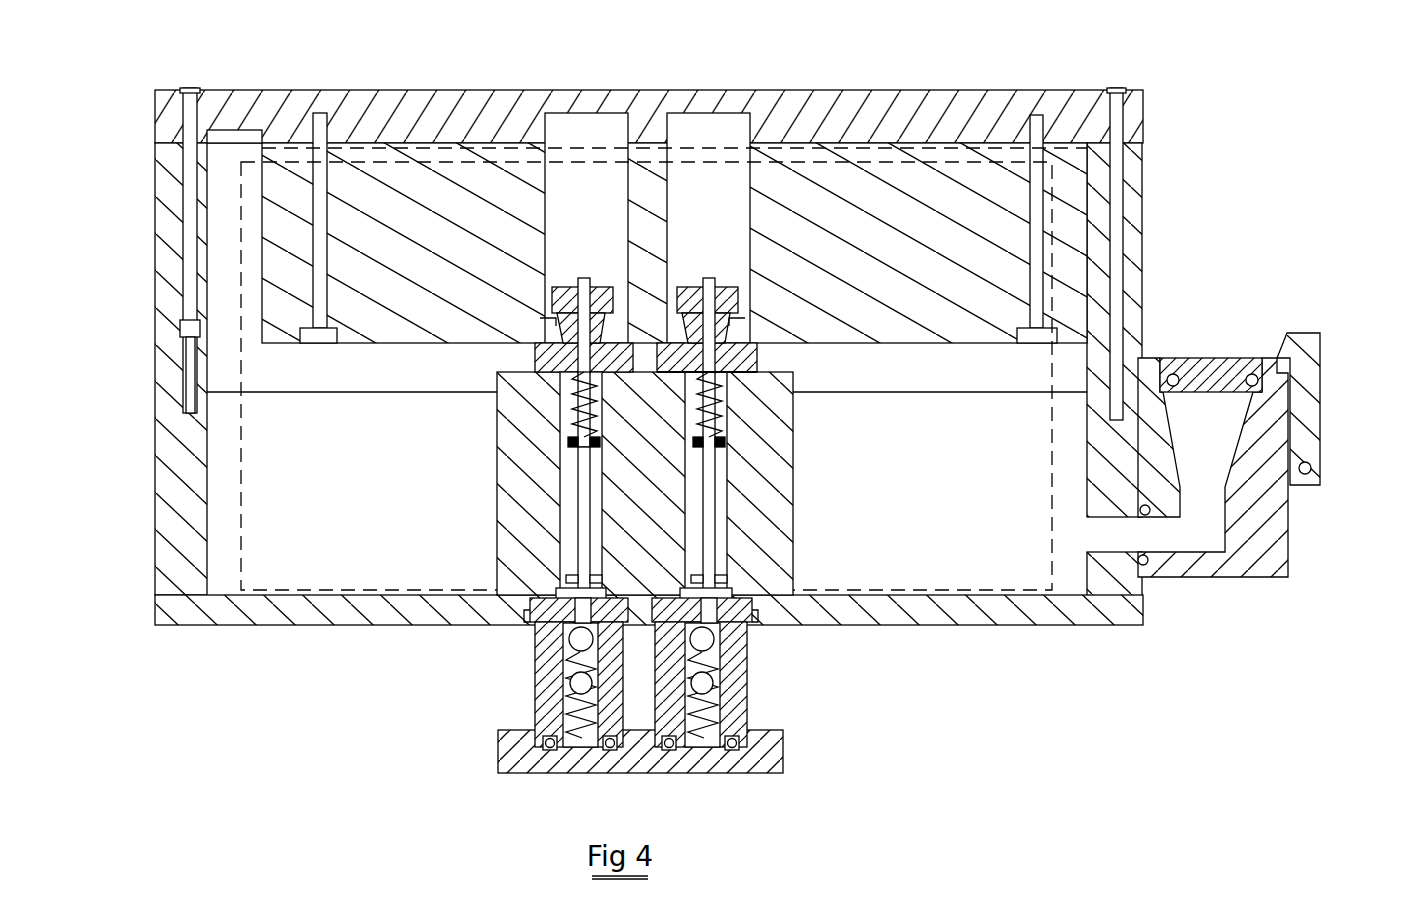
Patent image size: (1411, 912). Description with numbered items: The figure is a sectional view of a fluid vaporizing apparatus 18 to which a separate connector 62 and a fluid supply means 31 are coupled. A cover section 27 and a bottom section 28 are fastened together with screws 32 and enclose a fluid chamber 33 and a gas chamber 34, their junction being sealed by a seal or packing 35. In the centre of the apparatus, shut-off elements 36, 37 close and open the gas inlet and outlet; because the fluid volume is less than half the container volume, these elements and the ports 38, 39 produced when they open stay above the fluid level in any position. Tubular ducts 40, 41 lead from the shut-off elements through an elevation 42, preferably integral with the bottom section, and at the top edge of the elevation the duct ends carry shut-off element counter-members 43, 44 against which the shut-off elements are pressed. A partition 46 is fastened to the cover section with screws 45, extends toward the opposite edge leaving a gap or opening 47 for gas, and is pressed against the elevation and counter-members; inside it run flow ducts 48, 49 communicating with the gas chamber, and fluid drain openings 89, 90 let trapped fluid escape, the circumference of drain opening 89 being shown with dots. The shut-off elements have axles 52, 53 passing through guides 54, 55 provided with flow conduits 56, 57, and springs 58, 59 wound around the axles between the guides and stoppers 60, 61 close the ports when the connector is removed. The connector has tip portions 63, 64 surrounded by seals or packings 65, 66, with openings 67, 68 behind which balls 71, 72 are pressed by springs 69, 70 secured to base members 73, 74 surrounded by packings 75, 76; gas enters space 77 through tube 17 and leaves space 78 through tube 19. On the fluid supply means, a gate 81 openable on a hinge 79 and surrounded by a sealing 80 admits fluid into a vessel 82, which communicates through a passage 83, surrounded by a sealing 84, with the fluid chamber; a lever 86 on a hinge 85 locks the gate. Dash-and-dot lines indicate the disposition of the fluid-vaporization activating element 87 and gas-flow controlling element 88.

The tube 17 is at (565, 712).
The fluid vaporizing apparatus 18 is at (290, 628).
The tube 19 is at (718, 700).
The cover section 27 is at (170, 235).
The bottom section 28 is at (183, 443).
The fluid supply means 31 is at (1262, 550).
The screws 32 is at (173, 175).
The fluid chamber 33 is at (220, 485).
The gas chamber 34 is at (275, 368).
The seal or packing 35 is at (195, 330).
The shut-off element 36 is at (569, 285).
The shut-off element 37 is at (692, 285).
The port 38 is at (540, 318).
The port 39 is at (745, 318).
The tubular duct 40 is at (578, 528).
The tubular duct 41 is at (715, 512).
The elevation 42 is at (770, 482).
The shut-off element counter-member 43 is at (540, 350).
The shut-off element counter-member 44 is at (760, 350).
The screws 45 is at (320, 113).
The partition 46 is at (400, 175).
The gap or opening 47 is at (225, 300).
The flow duct 48 is at (588, 175).
The flow duct 49 is at (715, 175).
The axle 52 is at (580, 485).
The axle 53 is at (720, 535).
The guide 54 is at (566, 578).
The guide 55 is at (727, 578).
The flow conduit 56 is at (572, 395).
The flow conduit 57 is at (760, 372).
The spring 58 is at (578, 410).
The spring 59 is at (718, 405).
The stopper 60 is at (570, 441).
The stopper 61 is at (723, 443).
The connector 62 is at (738, 782).
The tip portion 63 is at (569, 636).
The tip portion 64 is at (714, 640).
The seal or packing 65 is at (530, 626).
The seal or packing 66 is at (752, 626).
The opening 67 is at (558, 596).
The opening 68 is at (730, 594).
The spring 69 is at (570, 685).
The spring 70 is at (712, 728).
The ball 71 is at (568, 660).
The ball 72 is at (712, 685).
The base member 73 is at (578, 777).
The base member 74 is at (695, 777).
The packing 75 is at (605, 748).
The packing 76 is at (675, 748).
The space 77 is at (545, 742).
The space 78 is at (738, 742).
The hinge 79 is at (1150, 358).
The sealing 80 is at (1180, 358).
The gate 81 is at (1203, 418).
The vessel 82 is at (1222, 358).
The passage 83 is at (1150, 528).
The sealing 84 is at (1147, 565).
The hinge 85 is at (1312, 470).
The lever 86 is at (1297, 348).
The fluid-vaporization activating element 87 is at (455, 155).
The gas-flow controlling element 88 is at (250, 140).
The fluid drain opening 89 is at (596, 285).
The fluid drain opening 90 is at (718, 285).